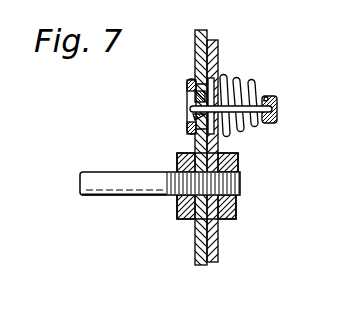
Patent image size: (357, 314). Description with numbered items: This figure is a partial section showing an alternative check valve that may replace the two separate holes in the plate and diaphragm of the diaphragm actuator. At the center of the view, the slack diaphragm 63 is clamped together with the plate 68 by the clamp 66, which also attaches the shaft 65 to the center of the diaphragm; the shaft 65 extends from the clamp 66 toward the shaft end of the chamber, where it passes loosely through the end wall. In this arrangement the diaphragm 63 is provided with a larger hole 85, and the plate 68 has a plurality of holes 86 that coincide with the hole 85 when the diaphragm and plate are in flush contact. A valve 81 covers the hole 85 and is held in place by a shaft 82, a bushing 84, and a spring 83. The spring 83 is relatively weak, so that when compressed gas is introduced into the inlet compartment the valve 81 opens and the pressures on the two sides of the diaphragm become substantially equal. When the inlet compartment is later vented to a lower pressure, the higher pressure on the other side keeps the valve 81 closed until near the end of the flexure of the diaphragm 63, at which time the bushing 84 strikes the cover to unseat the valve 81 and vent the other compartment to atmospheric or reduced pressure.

The diaphragm 63 is at (195, 246).
The shaft 65 is at (110, 177).
The clamp 66 is at (236, 207).
The plate 68 is at (218, 232).
The valve 81 is at (191, 106).
The shaft 82 is at (246, 90).
The spring 83 is at (253, 89).
The bushing 84 is at (278, 101).
The hole 85 is at (188, 89).
The holes 86 is at (215, 72).